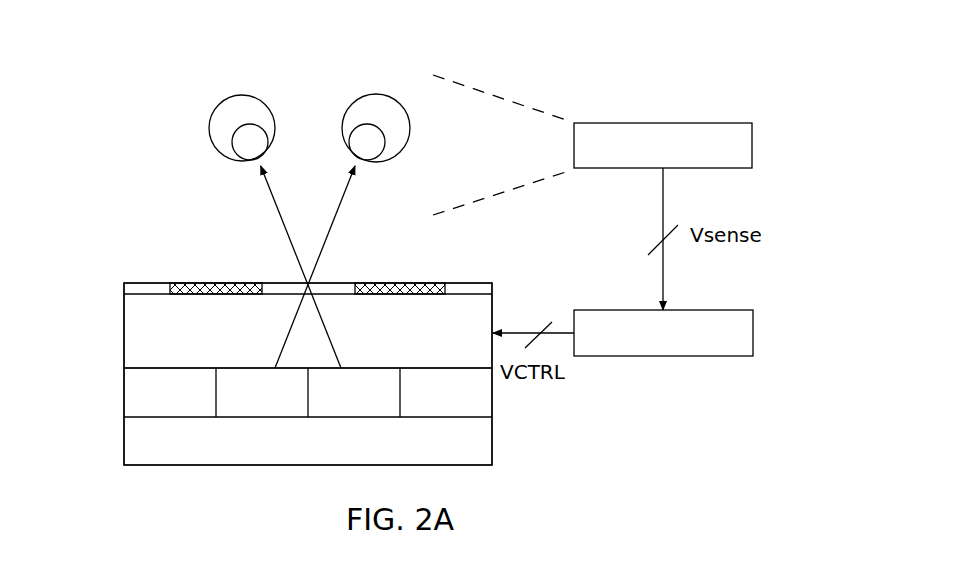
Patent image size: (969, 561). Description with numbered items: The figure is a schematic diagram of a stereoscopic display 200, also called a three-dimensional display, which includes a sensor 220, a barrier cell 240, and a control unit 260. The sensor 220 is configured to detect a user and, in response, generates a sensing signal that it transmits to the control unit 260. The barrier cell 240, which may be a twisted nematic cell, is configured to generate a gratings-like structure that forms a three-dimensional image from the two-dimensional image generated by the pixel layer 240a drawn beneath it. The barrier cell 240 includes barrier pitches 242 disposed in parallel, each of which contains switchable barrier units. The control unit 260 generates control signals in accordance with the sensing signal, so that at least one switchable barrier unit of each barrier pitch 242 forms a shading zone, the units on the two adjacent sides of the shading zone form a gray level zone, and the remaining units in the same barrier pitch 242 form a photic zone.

The stereoscopic display 200 is at (508, 41).
The sensor 220 is at (752, 143).
The barrier cell 240 is at (100, 283).
The pixel layer 240a is at (100, 370).
The barrier pitches 242 is at (492, 297).
The control unit 260 is at (753, 333).